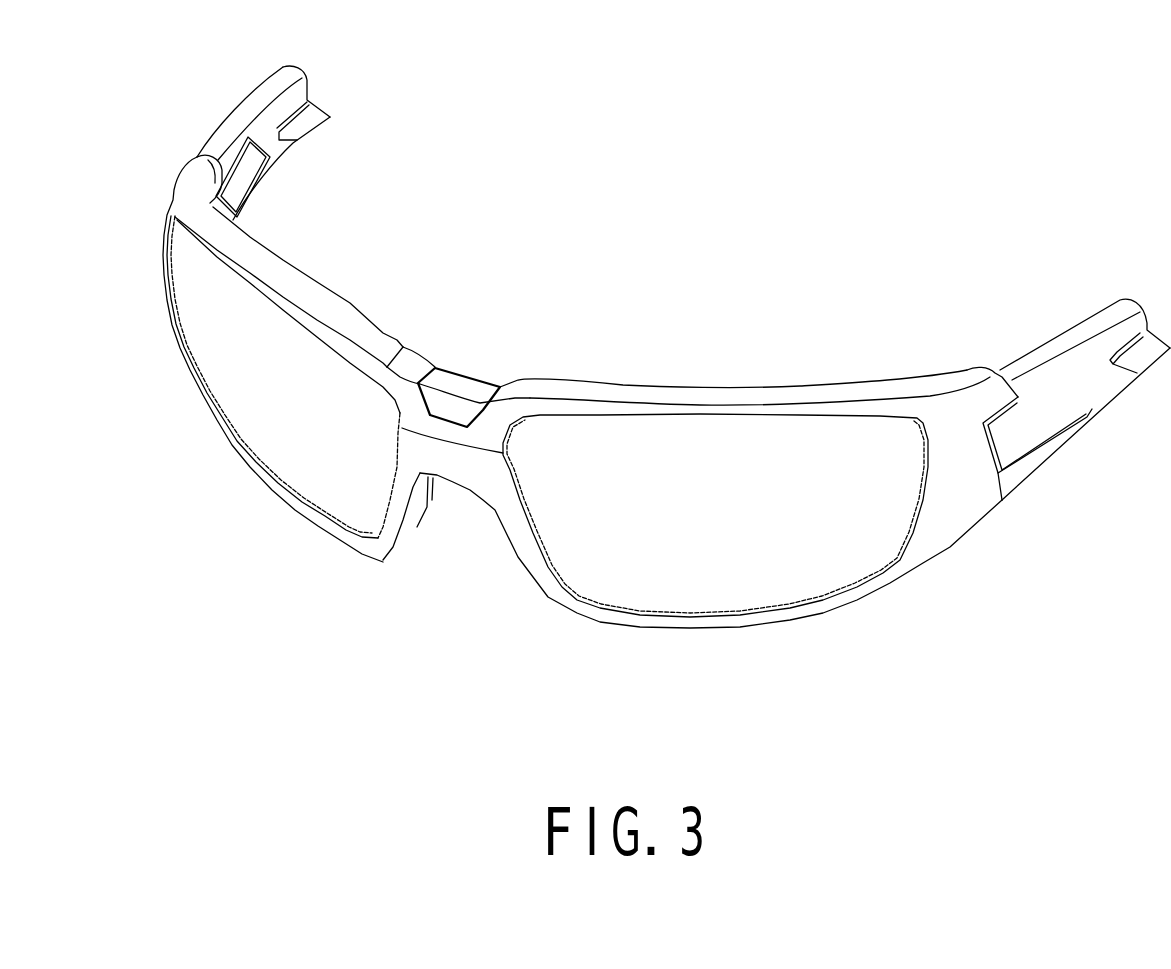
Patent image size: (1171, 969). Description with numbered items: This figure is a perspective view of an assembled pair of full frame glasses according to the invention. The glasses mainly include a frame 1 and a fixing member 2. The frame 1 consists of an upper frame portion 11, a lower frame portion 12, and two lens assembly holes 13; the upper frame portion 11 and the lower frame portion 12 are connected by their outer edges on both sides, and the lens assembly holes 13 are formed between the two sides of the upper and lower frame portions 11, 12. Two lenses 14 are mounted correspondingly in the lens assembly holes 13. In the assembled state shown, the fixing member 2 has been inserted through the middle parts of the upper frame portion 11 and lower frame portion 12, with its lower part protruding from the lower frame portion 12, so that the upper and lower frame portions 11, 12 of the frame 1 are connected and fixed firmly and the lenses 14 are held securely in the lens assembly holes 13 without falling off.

The frame 1 is at (247, 540).
The fixing member 2 is at (455, 386).
The upper frame portion 11 is at (623, 392).
The lower frame portion 12 is at (553, 597).
The lens assembly hole 13 is at (753, 422).
The lens 14 is at (783, 557).